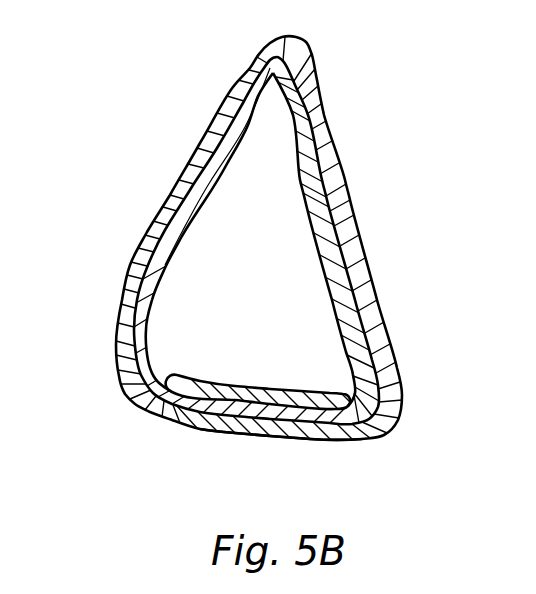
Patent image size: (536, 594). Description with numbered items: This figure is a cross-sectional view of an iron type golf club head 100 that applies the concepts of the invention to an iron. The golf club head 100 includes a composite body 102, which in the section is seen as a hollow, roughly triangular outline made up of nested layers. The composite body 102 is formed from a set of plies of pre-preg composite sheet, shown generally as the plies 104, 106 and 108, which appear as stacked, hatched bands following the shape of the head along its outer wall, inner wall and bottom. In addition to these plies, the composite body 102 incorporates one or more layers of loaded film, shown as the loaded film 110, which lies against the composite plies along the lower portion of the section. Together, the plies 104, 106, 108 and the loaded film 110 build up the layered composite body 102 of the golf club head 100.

The iron type golf club head 100 is at (471, 198).
The composite body 102 is at (272, 445).
The ply of pre-preg composite sheet 104 is at (118, 367).
The ply of pre-preg composite sheet 106 is at (140, 326).
The ply of pre-preg composite sheet 108 is at (328, 138).
The layer of loaded film 110 is at (248, 389).